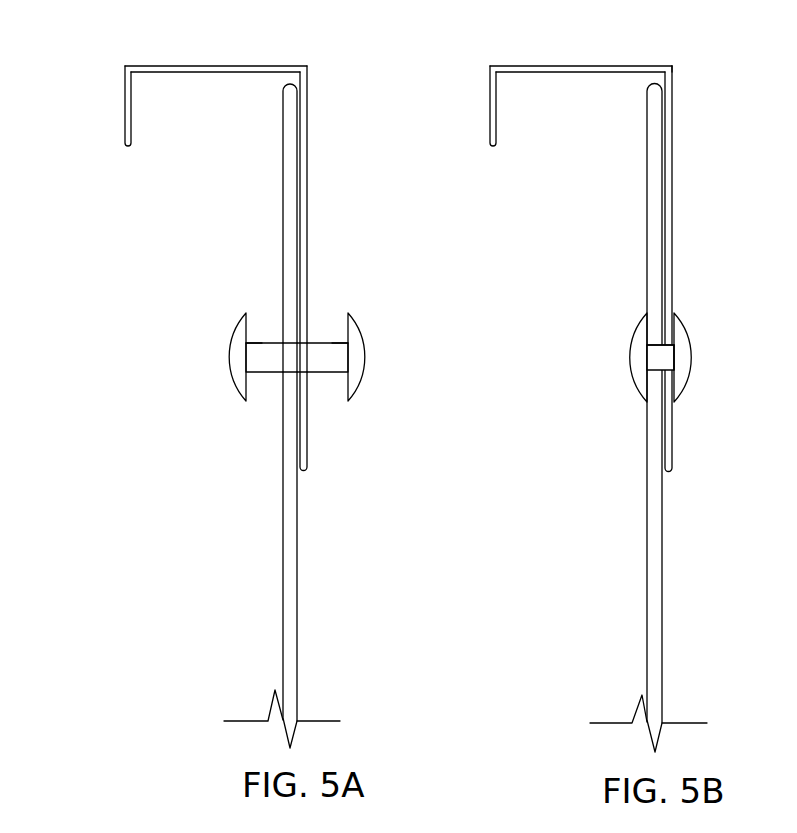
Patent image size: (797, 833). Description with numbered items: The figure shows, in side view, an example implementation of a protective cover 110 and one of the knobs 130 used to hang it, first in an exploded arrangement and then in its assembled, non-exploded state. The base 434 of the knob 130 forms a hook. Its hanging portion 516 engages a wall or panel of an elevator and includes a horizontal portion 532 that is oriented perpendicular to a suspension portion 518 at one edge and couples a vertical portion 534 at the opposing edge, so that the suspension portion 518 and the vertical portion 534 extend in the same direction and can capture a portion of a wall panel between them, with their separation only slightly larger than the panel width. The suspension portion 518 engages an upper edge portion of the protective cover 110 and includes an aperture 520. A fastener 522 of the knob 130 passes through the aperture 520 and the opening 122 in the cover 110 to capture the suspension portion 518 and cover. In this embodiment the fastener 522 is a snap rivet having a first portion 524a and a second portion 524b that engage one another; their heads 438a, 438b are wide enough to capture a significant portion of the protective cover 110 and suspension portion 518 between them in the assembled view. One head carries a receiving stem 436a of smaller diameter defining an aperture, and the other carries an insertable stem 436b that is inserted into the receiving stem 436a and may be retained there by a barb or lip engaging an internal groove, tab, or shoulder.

In FIG. 5A, the protective cover 110 is at (293, 556).
In FIG. 5B, the protective cover 110 is at (655, 568).
In FIG. 5A, the opening 122 is at (283, 378).
In FIG. 5B, the opening 122 is at (645, 383).
In FIG. 5A, the knob 130 is at (163, 66).
In FIG. 5B, the knob 130 is at (528, 66).
In FIG. 5A, the base 434 is at (306, 68).
In FIG. 5B, the base 434 is at (671, 68).
In FIG. 5B, the vertical portion 534 is at (495, 120).
In FIG. 5A, the hanging portion 516 is at (107, 110).
In FIG. 5B, the hanging portion 516 is at (472, 110).
In FIG. 5A, the suspension portion 518 is at (304, 170).
In FIG. 5B, the suspension portion 518 is at (669, 170).
In FIG. 5A, the aperture 520 is at (300, 378).
In FIG. 5B, the aperture 520 is at (670, 380).
In FIG. 5A, the fastener 522 is at (200, 361).
In FIG. 5B, the fastener 522 is at (596, 361).
In FIG. 5A, the first portion 524a is at (261, 306).
In FIG. 5A, the second portion 524b is at (338, 306).
In FIG. 5A, the horizontal portion 532 is at (226, 74).
In FIG. 5B, the horizontal portion 532 is at (591, 74).
In FIG. 5A, the receiving stem 436a is at (262, 362).
In FIG. 5B, the receiving stem 436a is at (660, 352).
In FIG. 5A, the insertable stem 436b is at (340, 362).
In FIG. 5A, the head 438a is at (238, 338).
In FIG. 5B, the head 438a is at (633, 336).
In FIG. 5A, the head 438b is at (356, 338).
In FIG. 5B, the head 438b is at (686, 336).